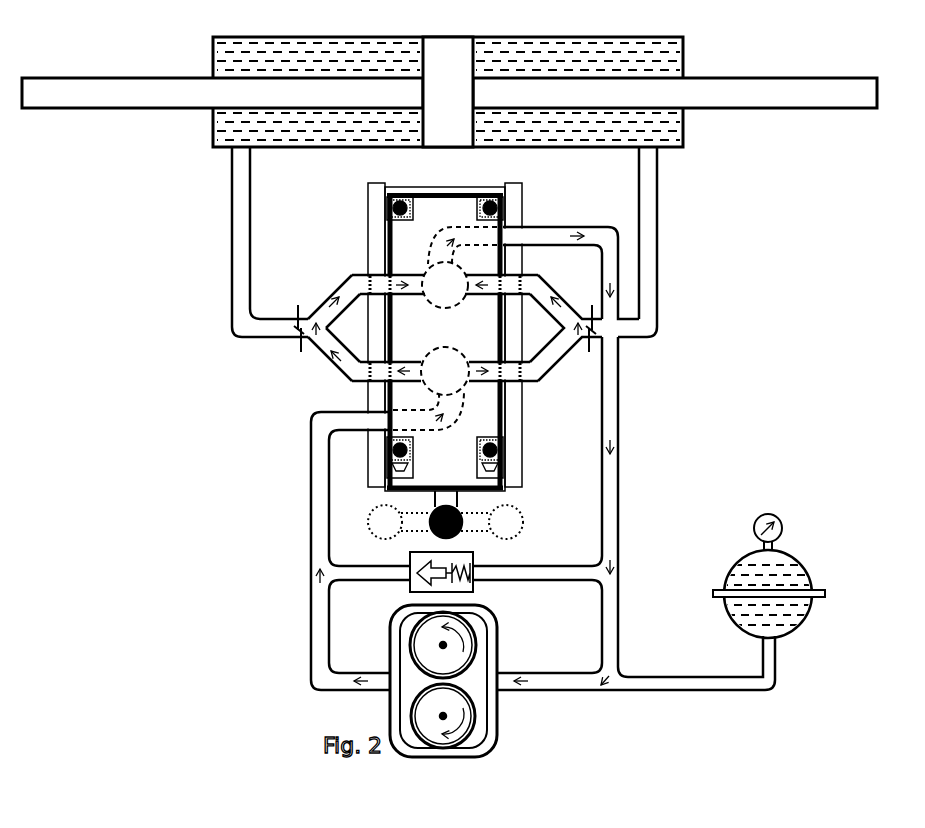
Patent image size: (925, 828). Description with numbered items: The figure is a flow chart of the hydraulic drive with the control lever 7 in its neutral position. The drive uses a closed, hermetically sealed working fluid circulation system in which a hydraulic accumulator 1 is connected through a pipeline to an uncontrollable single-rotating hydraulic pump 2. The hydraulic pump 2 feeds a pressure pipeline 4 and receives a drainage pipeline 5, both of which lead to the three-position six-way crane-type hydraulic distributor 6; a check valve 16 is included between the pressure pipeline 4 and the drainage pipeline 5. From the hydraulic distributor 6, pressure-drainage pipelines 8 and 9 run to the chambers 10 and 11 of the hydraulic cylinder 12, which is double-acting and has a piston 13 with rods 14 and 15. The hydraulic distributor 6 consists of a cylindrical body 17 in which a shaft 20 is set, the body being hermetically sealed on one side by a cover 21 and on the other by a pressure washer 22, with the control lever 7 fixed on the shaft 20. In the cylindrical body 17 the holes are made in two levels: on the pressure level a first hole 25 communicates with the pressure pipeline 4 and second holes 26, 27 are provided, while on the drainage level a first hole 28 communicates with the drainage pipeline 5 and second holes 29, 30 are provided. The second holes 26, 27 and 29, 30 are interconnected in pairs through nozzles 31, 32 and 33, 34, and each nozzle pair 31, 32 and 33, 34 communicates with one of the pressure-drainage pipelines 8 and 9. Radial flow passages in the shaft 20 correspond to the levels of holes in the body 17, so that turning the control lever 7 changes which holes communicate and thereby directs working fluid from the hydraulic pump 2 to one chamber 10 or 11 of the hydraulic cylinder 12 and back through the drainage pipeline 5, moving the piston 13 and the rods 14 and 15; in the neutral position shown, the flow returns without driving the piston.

The hydraulic accumulator 1 is at (802, 566).
The hydraulic pump 2 is at (398, 623).
The pressure pipeline 4 is at (372, 412).
The drainage pipeline 5 is at (600, 337).
The hydraulic distributor 6 is at (374, 449).
The control lever 7 is at (434, 524).
The pressure-drainage pipeline 8 is at (240, 246).
The pressure-drainage pipeline 9 is at (650, 277).
The chamber 10 is at (228, 65).
The chamber 11 is at (668, 62).
The hydraulic cylinder 12 is at (357, 148).
The piston 13 is at (437, 143).
The rod 14 is at (112, 85).
The rod 15 is at (781, 90).
The check valve 16 is at (418, 578).
The cylindrical body 17 is at (374, 257).
The shaft 20 is at (402, 306).
The cover 21 is at (443, 193).
The pressure washer 22 is at (603, 586).
The first hole 25 is at (456, 381).
The second hole 26 is at (370, 377).
The second hole 27 is at (504, 361).
The first hole 28 is at (448, 277).
The second hole 29 is at (383, 290).
The second hole 30 is at (514, 286).
The nozzle 31 is at (309, 346).
The nozzle 32 is at (343, 286).
The nozzle 33 is at (556, 364).
The nozzle 34 is at (567, 307).